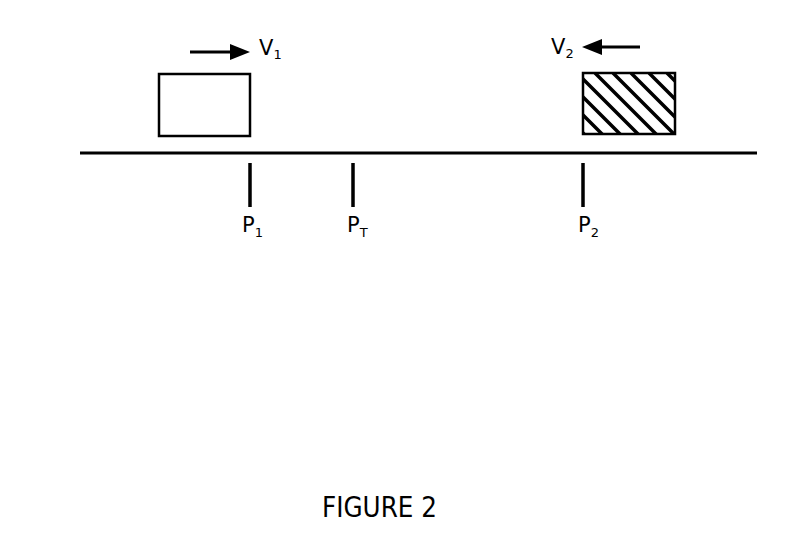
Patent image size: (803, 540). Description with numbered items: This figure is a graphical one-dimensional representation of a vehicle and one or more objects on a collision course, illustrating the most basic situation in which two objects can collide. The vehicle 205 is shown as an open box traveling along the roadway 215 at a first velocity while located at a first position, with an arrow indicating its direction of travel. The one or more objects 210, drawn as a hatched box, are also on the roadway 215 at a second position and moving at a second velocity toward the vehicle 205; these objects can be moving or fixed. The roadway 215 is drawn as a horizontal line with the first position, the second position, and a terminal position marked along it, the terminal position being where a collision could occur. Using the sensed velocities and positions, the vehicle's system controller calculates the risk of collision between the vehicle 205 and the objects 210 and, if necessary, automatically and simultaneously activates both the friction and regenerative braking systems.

The vehicle 205 is at (159, 98).
The objects 210 is at (675, 92).
The roadway 215 is at (107, 155).